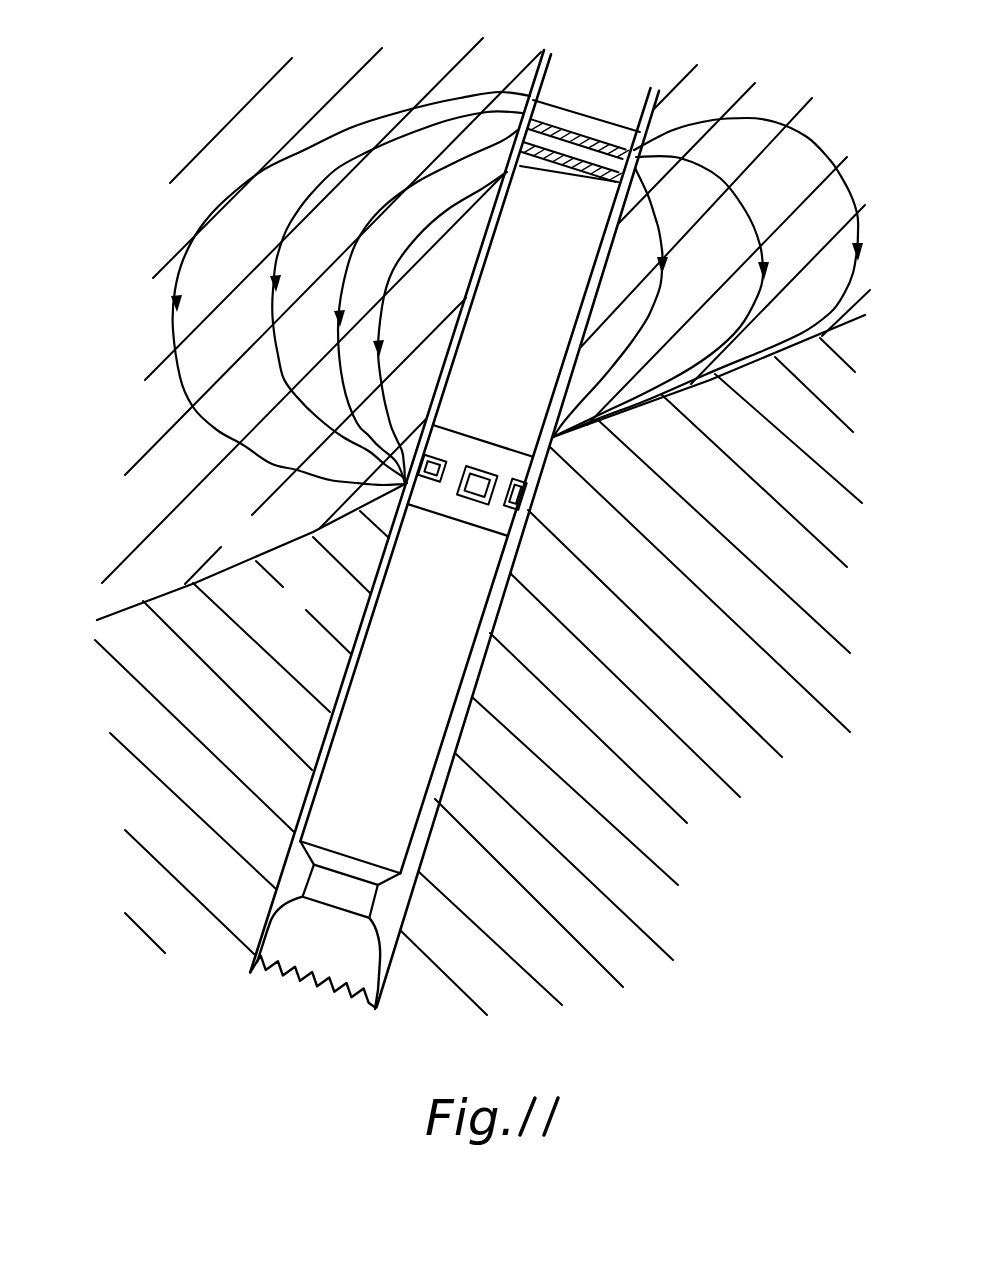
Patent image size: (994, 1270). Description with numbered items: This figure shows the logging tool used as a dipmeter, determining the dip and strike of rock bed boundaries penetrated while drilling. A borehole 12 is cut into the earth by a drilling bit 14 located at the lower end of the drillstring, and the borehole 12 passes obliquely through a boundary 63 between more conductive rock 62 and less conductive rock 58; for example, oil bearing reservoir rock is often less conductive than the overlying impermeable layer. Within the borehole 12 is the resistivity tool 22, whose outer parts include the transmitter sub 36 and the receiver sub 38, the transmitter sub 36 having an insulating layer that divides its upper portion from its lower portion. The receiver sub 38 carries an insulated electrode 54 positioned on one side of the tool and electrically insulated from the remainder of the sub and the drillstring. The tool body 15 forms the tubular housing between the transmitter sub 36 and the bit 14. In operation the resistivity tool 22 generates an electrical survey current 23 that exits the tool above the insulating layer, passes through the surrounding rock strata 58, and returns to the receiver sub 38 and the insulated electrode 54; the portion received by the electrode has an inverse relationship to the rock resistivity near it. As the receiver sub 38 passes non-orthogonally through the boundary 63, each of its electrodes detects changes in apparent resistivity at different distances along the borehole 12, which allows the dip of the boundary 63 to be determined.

The borehole 12 is at (430, 838).
The drilling bit 14 is at (383, 948).
The tool body 15 is at (437, 760).
The resistivity tool 22 is at (573, 314).
The electrical survey current 23 is at (747, 218).
The transmitter sub 36 is at (527, 105).
The receiver sub 38 is at (528, 470).
The insulated electrode 54 is at (521, 495).
The rock strata 58 is at (317, 608).
The more conductive rock 62 is at (252, 546).
The boundary 63 is at (117, 613).